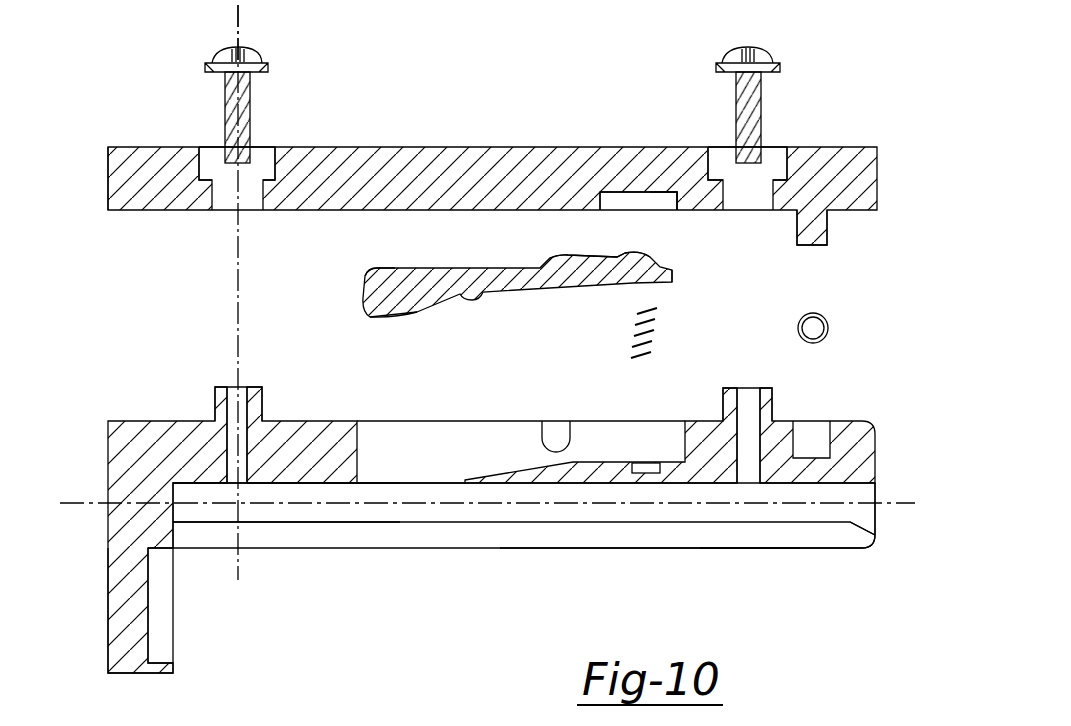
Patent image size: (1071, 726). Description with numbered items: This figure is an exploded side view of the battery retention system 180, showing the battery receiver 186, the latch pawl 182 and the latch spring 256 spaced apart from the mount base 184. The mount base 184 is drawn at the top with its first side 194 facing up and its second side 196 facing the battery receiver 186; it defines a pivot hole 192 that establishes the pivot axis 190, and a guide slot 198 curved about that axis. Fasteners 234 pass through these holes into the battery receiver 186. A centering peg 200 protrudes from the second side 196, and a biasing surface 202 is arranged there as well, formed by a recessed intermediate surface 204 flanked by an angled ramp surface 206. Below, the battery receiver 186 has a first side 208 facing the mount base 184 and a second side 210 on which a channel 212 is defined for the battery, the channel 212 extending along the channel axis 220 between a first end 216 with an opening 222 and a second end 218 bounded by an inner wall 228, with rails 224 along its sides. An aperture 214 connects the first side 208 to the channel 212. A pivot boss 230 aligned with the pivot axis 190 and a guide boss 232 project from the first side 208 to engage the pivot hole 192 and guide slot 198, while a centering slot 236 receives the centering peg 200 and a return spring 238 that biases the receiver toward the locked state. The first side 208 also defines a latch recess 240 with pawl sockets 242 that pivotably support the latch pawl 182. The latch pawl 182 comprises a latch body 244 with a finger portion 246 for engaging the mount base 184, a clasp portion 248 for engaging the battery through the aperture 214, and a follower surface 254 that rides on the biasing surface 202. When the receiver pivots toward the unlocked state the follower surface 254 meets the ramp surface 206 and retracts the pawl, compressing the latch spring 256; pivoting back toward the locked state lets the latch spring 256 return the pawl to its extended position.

The battery retention system 180 is at (866, 58).
The latch pawl 182 is at (492, 286).
The mount base 184 is at (505, 180).
The battery receiver 186 is at (300, 450).
The pivot axis 190 is at (236, 12).
The pivot hole 192 is at (205, 152).
The first side 194 is at (405, 140).
The second side 196 is at (137, 218).
The guide slot 198 is at (782, 152).
The centering peg 200 is at (832, 229).
The biasing surface 202 is at (610, 214).
The intermediate surface 204 is at (628, 197).
The ramp surface 206 is at (655, 210).
The first side 208 is at (455, 498).
The second side 210 is at (773, 558).
The channel 212 is at (467, 572).
The aperture 214 is at (413, 483).
The first end 216 is at (892, 543).
The second end 218 is at (198, 572).
The channel axis 220 is at (282, 500).
The opening 222 is at (879, 493).
The rails 224 is at (650, 546).
The inner wall 228 is at (125, 578).
The pivot boss 230 is at (213, 394).
The guide boss 232 is at (727, 403).
The fasteners 234 is at (246, 57).
The centering slot 236 is at (817, 432).
The return spring 238 is at (830, 330).
The latch recess 240 is at (512, 437).
The pawl sockets 242 is at (566, 432).
The latch body 244 is at (383, 265).
The finger portion 246 is at (688, 278).
The clasp portion 248 is at (366, 326).
The follower surface 254 is at (618, 250).
The latch spring 256 is at (665, 342).